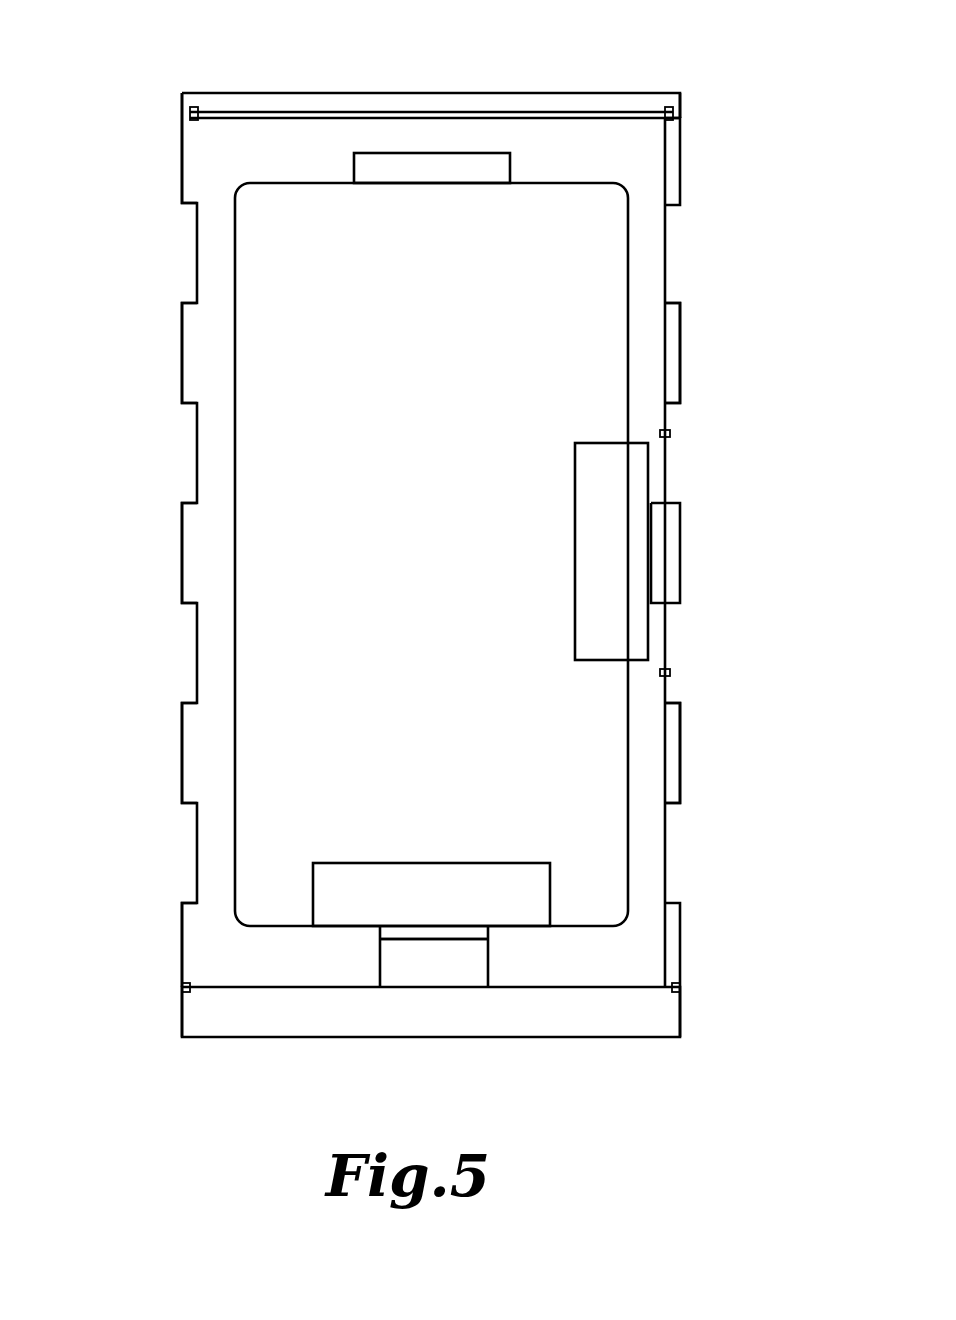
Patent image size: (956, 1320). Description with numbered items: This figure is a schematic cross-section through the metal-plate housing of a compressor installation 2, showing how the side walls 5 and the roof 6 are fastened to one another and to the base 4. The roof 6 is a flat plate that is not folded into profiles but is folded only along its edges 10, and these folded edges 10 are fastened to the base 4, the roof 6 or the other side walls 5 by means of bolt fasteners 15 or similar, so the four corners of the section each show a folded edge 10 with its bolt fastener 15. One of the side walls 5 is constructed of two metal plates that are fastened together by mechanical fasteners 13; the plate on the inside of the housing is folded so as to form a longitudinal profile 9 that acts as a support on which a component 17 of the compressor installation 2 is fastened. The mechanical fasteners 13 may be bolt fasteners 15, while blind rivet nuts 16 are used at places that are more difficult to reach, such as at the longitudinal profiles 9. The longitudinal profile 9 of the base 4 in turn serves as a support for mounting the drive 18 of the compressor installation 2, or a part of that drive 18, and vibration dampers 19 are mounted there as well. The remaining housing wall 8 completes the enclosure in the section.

The compressor installation 2 is at (500, 222).
The base 4 is at (352, 1037).
The side walls 5 is at (182, 165).
The roof 6 is at (430, 93).
The housing body 8 is at (295, 985).
The longitudinal profiles 9 is at (197, 256).
The folded edges 10 is at (186, 112).
The mechanical fasteners 13 is at (208, 125).
The bolt fasteners 15 is at (207, 120).
The blind rivet nuts 16 is at (665, 433).
The component 17 is at (617, 490).
The drive 18 is at (400, 880).
The vibration dampers 19 is at (452, 934).